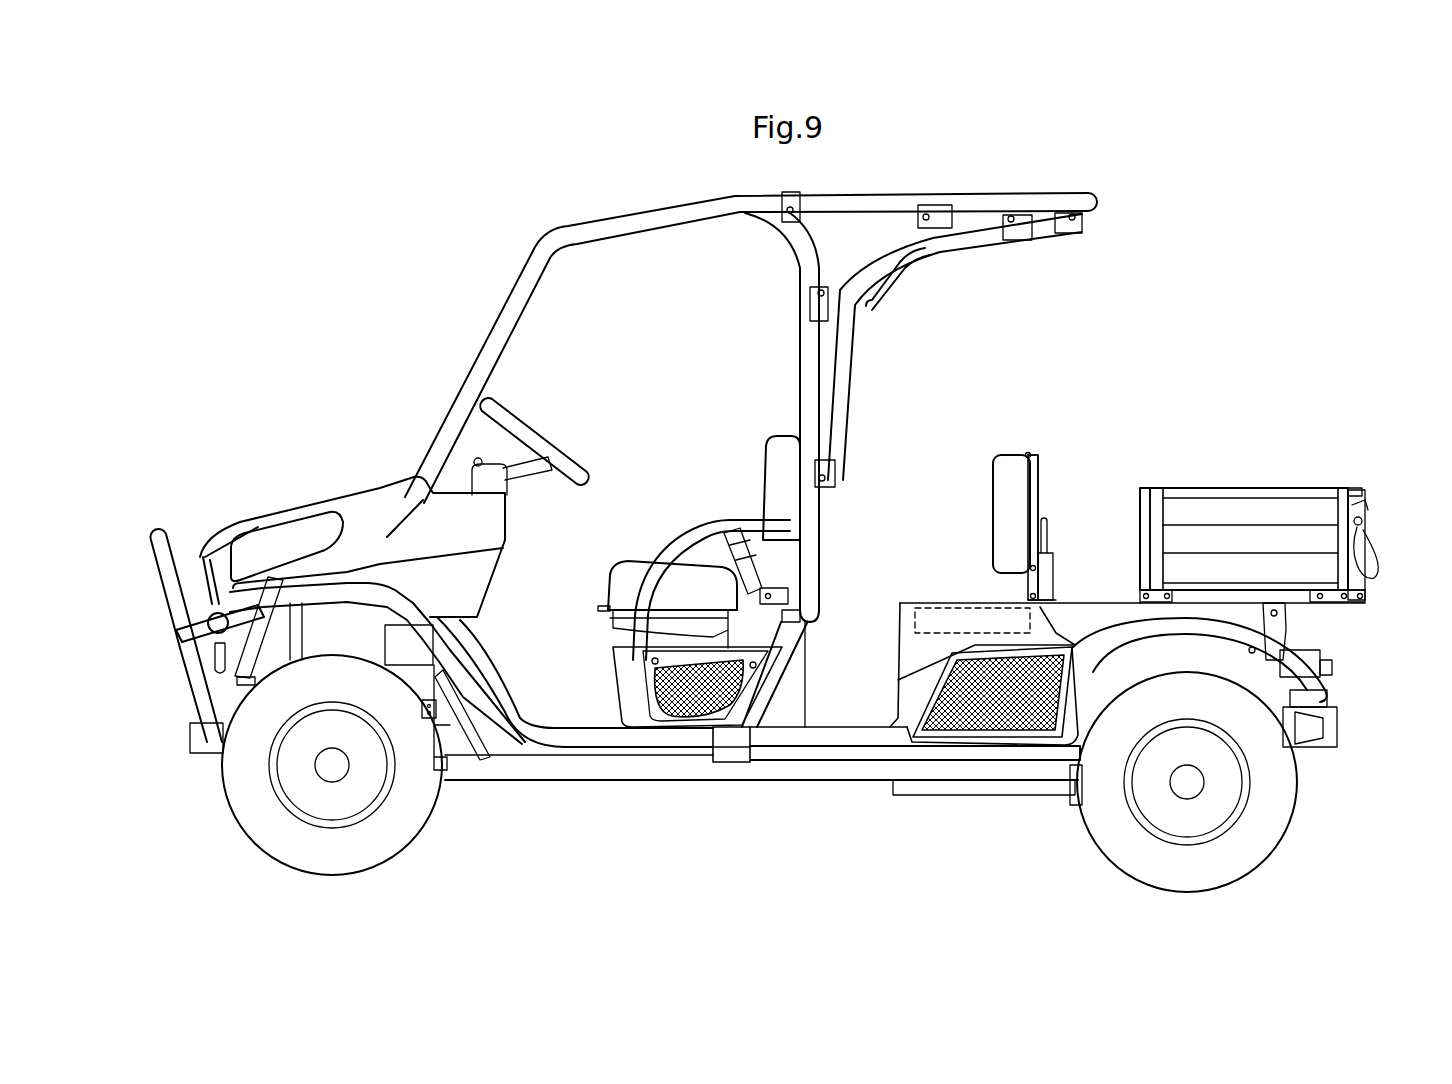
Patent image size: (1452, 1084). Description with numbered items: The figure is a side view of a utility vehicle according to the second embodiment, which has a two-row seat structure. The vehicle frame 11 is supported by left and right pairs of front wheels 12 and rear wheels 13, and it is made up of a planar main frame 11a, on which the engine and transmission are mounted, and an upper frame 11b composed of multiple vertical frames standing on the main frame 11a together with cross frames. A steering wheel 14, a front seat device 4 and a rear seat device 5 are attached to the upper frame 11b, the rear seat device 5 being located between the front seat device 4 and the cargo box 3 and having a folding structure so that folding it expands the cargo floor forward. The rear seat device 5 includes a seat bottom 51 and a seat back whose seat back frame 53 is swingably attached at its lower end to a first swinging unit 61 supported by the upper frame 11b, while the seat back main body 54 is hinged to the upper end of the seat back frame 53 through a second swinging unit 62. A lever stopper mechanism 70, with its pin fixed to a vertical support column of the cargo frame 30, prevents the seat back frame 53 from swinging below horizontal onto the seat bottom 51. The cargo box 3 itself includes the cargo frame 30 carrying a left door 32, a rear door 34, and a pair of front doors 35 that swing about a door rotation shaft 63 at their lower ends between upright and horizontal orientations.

The cargo box 3 is at (1256, 518).
The front seat device 4 is at (755, 455).
The rear seat device 5 is at (994, 485).
The vehicle frame 11 is at (763, 798).
The main frame 11a is at (684, 772).
The upper frame 11b is at (575, 715).
The front wheels 12 is at (398, 836).
The rear wheels 13 is at (1268, 832).
The steering wheel 14 is at (530, 430).
The cargo frame 30 is at (1157, 492).
The left door 32 is at (1252, 490).
The rear door 34 is at (1370, 520).
The front doors 35 is at (1142, 517).
The seat bottom 51 is at (968, 595).
The seat back frame 53 is at (1040, 470).
The seat back main body 54 is at (1005, 470).
The first swinging unit 61 is at (1028, 595).
The second swinging unit 62 is at (1027, 453).
The door rotation shaft 63 is at (1143, 597).
The lever stopper mechanism 70 is at (1050, 546).